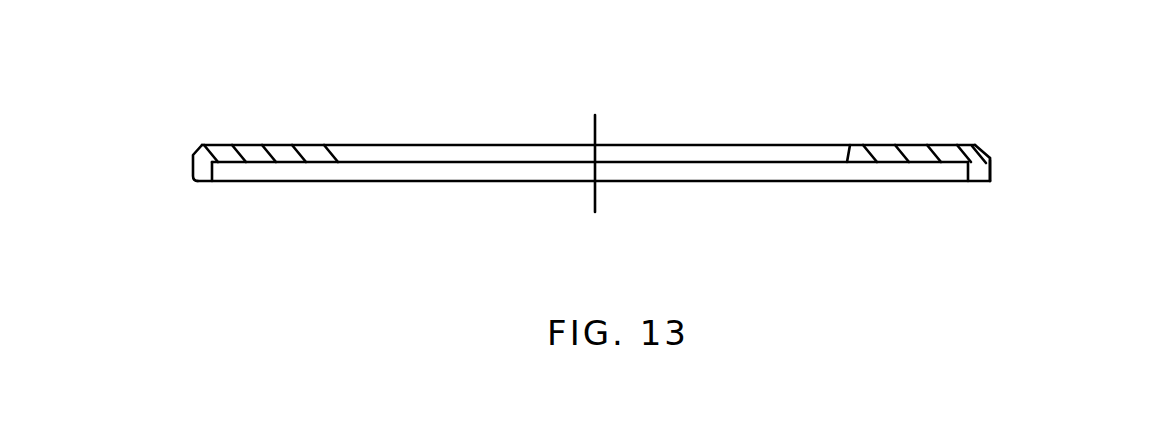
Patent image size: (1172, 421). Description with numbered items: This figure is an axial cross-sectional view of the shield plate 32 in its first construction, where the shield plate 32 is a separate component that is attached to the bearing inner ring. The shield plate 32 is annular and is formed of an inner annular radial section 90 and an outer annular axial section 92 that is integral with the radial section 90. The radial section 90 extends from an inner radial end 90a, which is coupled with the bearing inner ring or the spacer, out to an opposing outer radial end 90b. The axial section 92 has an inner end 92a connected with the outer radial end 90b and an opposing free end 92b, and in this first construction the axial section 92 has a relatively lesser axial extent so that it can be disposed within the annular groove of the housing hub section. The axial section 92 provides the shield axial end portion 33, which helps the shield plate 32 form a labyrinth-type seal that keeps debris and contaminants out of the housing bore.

The shield plate 32 is at (293, 98).
The inner annular radial section 90 is at (322, 139).
The inner radial end 90a is at (847, 152).
The outer radial end 90b is at (977, 143).
The outer annular axial section 92 is at (185, 167).
The inner end of axial section 92a is at (980, 148).
The free end of axial section 92b is at (977, 184).
The axial end portion 33 is at (1008, 168).